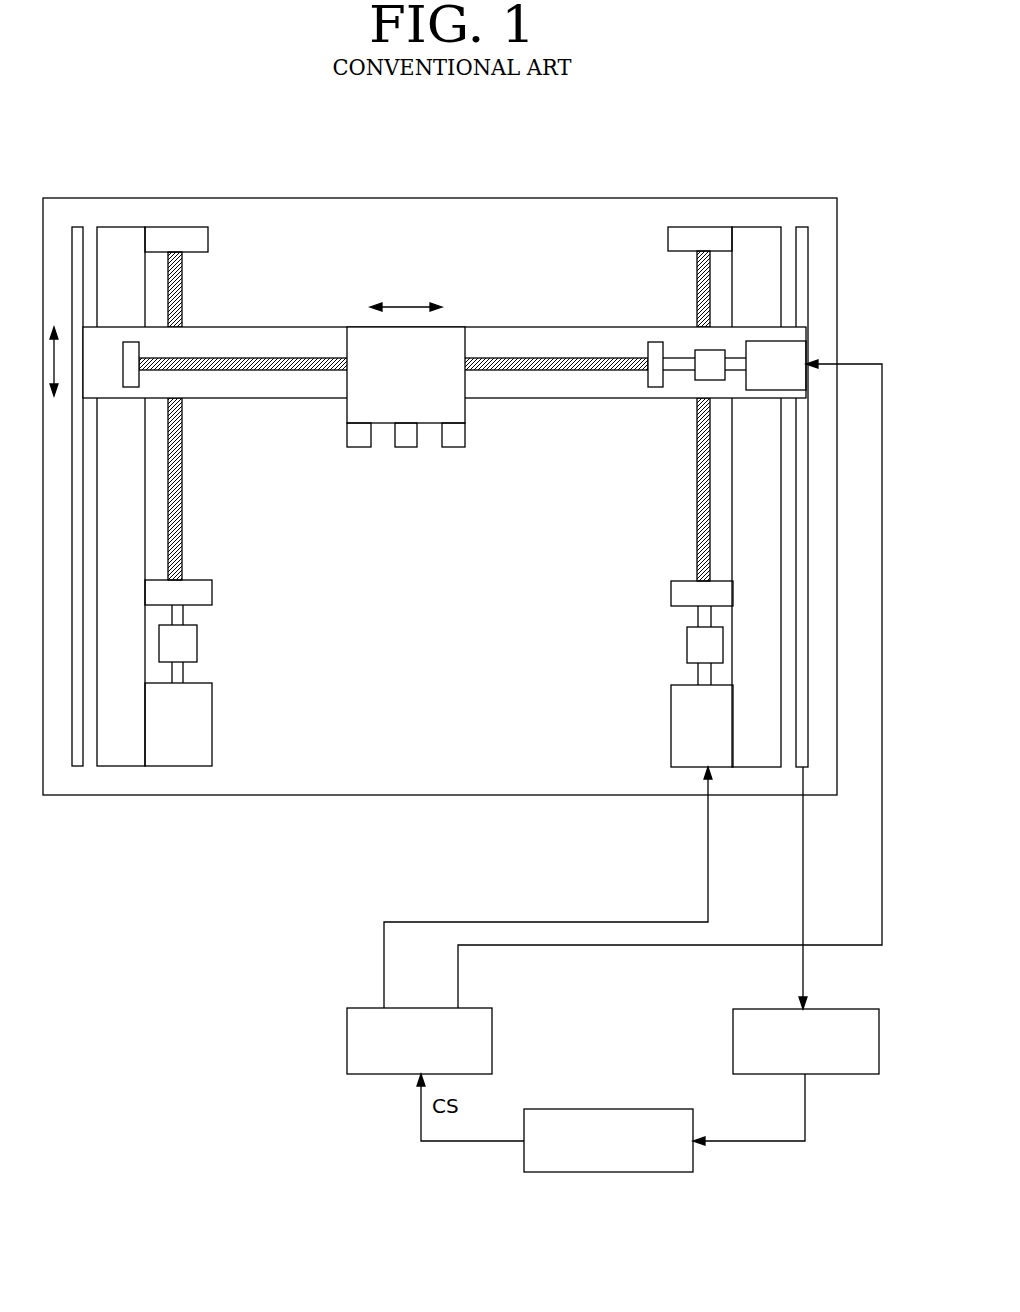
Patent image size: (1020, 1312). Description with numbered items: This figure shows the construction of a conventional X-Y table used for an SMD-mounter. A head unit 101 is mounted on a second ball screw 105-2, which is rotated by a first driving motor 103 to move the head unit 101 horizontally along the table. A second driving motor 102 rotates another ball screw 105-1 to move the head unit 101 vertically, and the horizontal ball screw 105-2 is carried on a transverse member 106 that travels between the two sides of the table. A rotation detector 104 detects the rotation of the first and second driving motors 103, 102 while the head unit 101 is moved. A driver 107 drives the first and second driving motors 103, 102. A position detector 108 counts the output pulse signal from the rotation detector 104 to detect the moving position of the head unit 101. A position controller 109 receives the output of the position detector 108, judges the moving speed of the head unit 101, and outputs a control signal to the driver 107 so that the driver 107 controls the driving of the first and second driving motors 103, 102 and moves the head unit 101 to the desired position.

The head unit 101 is at (353, 408).
The second driving motor 102 is at (680, 728).
The first driving motor 103 is at (792, 356).
The rotation detector 104 is at (802, 257).
The ball screw 105-1 is at (697, 515).
The second ball screw 105-2 is at (550, 358).
The beam 106 is at (567, 390).
The driver 107 is at (347, 1032).
The position detector 108 is at (733, 1033).
The position controller 109 is at (677, 1172).